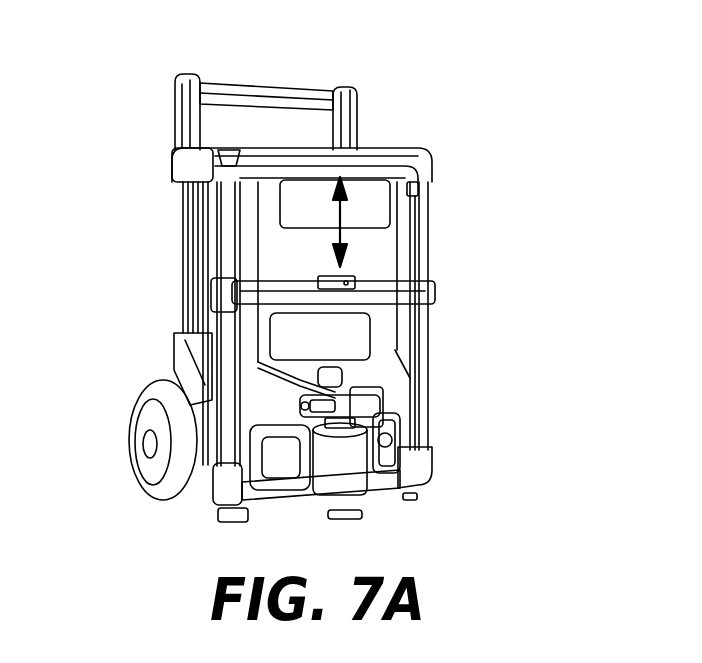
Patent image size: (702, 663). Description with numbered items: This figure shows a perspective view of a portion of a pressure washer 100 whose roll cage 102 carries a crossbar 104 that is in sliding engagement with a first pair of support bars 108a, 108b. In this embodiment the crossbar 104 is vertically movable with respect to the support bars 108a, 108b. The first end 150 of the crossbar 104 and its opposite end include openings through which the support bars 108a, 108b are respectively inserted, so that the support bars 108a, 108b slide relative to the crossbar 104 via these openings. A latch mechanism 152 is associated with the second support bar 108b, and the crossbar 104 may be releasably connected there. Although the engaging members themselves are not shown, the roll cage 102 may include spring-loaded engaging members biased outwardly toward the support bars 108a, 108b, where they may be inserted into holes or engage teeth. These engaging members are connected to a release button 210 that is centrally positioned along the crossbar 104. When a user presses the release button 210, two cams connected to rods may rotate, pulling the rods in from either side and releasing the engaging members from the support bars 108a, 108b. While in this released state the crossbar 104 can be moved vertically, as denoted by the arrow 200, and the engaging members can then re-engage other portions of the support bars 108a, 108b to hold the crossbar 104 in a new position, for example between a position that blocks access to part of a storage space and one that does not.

The pressure washer 100 is at (352, 29).
The roll cage 102 is at (418, 110).
The crossbar 104 is at (420, 246).
The first support bar 108a is at (422, 383).
The second support bar 108b is at (222, 365).
The first end 150 is at (431, 292).
The latch mechanism 152 is at (212, 290).
The arrow 200 is at (341, 262).
The release button 210 is at (320, 278).